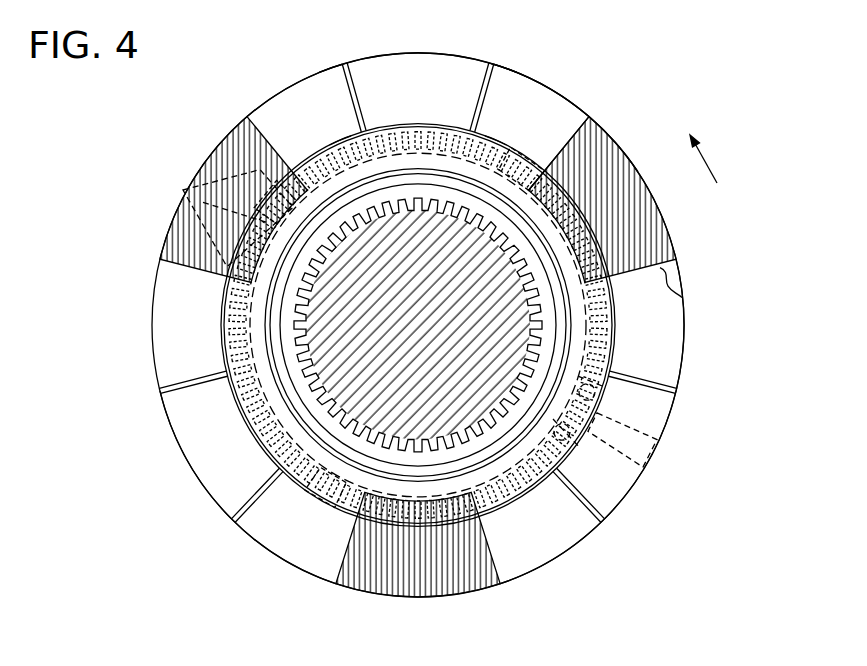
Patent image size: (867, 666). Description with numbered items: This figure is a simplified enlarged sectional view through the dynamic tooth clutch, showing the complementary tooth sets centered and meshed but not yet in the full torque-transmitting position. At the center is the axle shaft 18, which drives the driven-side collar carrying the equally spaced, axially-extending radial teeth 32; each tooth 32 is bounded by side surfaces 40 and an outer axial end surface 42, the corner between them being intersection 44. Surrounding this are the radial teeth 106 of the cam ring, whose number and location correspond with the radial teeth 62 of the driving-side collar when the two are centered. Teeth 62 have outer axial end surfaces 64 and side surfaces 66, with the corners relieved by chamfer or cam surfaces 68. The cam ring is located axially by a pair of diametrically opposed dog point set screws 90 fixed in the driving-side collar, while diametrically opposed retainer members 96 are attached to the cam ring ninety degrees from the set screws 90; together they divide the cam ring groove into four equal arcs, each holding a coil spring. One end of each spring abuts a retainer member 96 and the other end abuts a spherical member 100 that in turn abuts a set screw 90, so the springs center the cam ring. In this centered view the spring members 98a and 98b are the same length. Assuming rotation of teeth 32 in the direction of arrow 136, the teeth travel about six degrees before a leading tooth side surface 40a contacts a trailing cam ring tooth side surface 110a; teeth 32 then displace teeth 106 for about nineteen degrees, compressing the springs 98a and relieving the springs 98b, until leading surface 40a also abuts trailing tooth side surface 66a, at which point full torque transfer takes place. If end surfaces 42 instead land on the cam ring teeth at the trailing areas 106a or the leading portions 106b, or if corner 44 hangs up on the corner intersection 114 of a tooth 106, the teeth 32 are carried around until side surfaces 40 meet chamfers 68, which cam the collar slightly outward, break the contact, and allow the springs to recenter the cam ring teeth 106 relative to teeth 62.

The axle shaft 18 is at (428, 355).
The radial teeth 32 is at (163, 242).
The side surfaces 40 is at (682, 292).
The leading tooth side surface 40a is at (560, 160).
The tooth outer axial end surfaces 42 is at (600, 150).
The corner intersection 44 is at (561, 135).
The radial teeth 62 is at (420, 72).
The outer axial end surfaces 64 is at (372, 72).
The side surfaces 66 is at (338, 88).
The trailing tooth side surface 66a is at (492, 80).
The chamfer or cam surfaces 68 is at (347, 72).
The dog point set screws 90 is at (215, 195).
The retainer members 96 is at (481, 207).
The spring members 98a is at (294, 176).
The spring members 98b is at (325, 490).
The spherical members 100 is at (318, 268).
The radial teeth 106 is at (417, 155).
The trailing tooth areas 106a is at (473, 168).
The leading tooth portions 106b is at (342, 168).
The trailing tooth side surface 110a is at (548, 168).
The corner intersection 114 is at (512, 254).
The arrow 136 is at (706, 162).